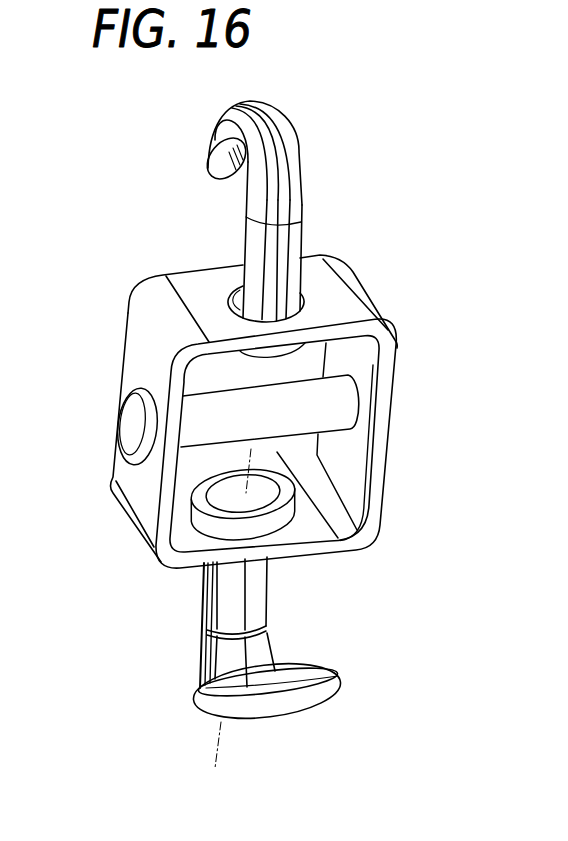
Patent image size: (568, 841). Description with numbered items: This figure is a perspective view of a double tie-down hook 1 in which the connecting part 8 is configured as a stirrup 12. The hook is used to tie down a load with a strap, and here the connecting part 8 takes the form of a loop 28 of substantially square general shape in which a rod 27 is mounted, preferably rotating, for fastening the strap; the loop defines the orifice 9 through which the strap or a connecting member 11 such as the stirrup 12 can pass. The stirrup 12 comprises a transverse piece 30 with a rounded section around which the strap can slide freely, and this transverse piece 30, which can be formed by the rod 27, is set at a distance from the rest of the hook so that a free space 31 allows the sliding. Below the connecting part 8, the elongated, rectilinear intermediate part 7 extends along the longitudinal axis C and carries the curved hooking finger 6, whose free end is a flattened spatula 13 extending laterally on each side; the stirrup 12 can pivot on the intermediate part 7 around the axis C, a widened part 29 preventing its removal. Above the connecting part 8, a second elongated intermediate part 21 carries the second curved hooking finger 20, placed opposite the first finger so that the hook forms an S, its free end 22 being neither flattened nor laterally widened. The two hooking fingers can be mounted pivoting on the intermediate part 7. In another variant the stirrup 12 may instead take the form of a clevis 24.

The tie-down hook 1 is at (76, 596).
The curved hooking finger 6 is at (164, 634).
The intermediate part 7 is at (296, 591).
The connecting part 8 is at (213, 694).
The orifice 9 is at (303, 443).
The connecting member 11 is at (268, 662).
The stirrup 12 is at (78, 470).
The spatula 13 is at (358, 690).
The second curved hooking finger 20 is at (355, 118).
The second elongated intermediate part 21 is at (220, 241).
The free end 22 is at (197, 184).
The clevis 24 is at (155, 191).
The rod 27 is at (233, 403).
The loop 28 is at (137, 364).
The widened part 29 is at (207, 527).
The transverse piece 30 is at (270, 411).
The free space 31 is at (297, 365).
The axis C is at (215, 748).